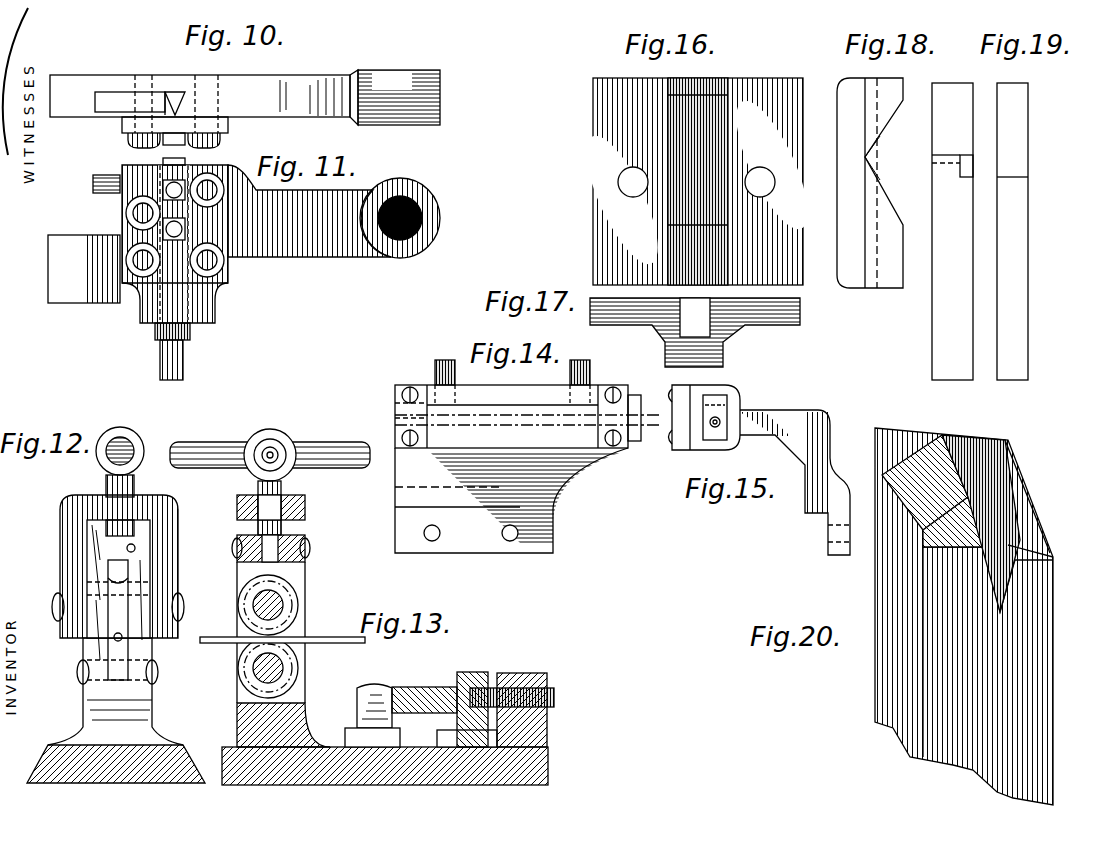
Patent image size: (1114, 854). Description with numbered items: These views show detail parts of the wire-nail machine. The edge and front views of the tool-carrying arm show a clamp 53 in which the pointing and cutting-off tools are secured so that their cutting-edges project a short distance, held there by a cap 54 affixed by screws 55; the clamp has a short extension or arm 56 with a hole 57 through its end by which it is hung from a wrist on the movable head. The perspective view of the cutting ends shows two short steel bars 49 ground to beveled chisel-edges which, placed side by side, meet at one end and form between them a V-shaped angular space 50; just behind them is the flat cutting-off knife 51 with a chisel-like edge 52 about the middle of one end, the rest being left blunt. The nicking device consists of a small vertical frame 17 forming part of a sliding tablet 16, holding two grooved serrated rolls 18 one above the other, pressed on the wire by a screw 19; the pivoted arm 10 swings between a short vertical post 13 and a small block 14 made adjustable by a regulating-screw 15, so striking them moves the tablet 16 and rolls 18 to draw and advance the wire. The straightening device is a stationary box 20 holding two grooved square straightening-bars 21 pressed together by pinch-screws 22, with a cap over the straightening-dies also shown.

In FIG. 13, the pivoted arm 10 is at (444, 705).
In FIG. 13, the vertical post 13 is at (372, 701).
In FIG. 13, the small block 14 is at (502, 697).
In FIG. 13, the regulating-screw 15 is at (526, 699).
In FIG. 12, the sliding tablet 16 is at (116, 774).
In FIG. 13, the sliding tablet 16 is at (385, 775).
In FIG. 12, the vertical frame 17 is at (192, 621).
In FIG. 12, the nicking-rolls 18 is at (310, 600).
In FIG. 12, the screw 19 is at (128, 440).
In FIG. 14, the stationary box 20 is at (527, 468).
In FIG. 14, the straightening-bars 21 is at (396, 415).
In FIG. 15, the straightening-bars 21 is at (722, 415).
In FIG. 14, the pinch-screws 22 is at (511, 401).
In FIG. 20, the angular-edged pointing-tools 49 is at (980, 616).
In FIG. 20, the V-shaped angular space 50 is at (1005, 528).
In FIG. 20, the cutting-off knife 51 is at (933, 477).
In FIG. 20, the chisel-like edge 52 is at (981, 511).
In FIG. 10, the clamp 53 is at (175, 92).
In FIG. 11, the clamp 53 is at (138, 269).
In FIG. 10, the cap 54 is at (175, 117).
In FIG. 11, the cap 54 is at (192, 210).
In FIG. 10, the screws 55 is at (133, 146).
In FIG. 11, the screws 55 is at (126, 212).
In FIG. 10, the arm 56 is at (200, 85).
In FIG. 11, the arm 56 is at (309, 220).
In FIG. 10, the hole 57 is at (395, 106).
In FIG. 11, the hole 57 is at (419, 218).